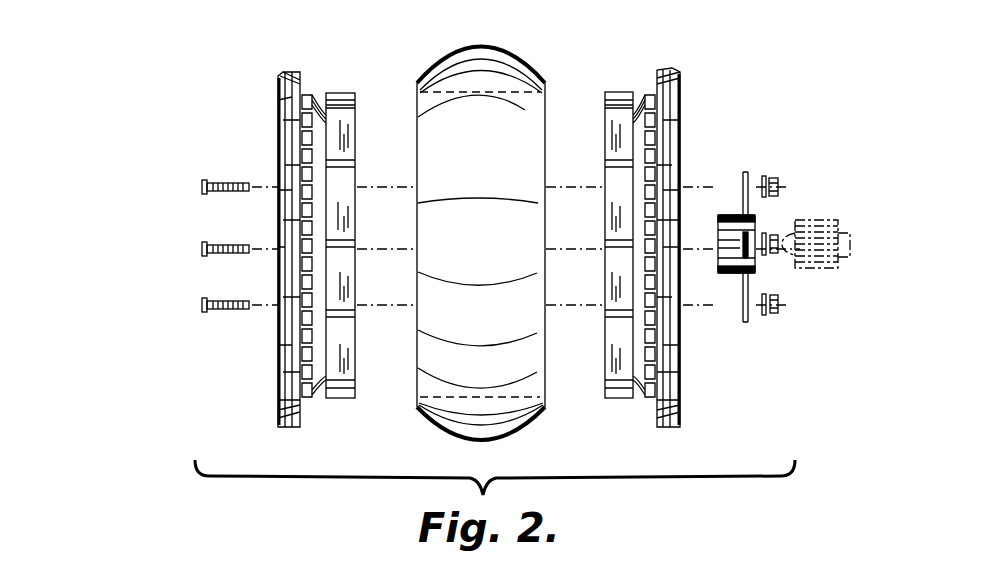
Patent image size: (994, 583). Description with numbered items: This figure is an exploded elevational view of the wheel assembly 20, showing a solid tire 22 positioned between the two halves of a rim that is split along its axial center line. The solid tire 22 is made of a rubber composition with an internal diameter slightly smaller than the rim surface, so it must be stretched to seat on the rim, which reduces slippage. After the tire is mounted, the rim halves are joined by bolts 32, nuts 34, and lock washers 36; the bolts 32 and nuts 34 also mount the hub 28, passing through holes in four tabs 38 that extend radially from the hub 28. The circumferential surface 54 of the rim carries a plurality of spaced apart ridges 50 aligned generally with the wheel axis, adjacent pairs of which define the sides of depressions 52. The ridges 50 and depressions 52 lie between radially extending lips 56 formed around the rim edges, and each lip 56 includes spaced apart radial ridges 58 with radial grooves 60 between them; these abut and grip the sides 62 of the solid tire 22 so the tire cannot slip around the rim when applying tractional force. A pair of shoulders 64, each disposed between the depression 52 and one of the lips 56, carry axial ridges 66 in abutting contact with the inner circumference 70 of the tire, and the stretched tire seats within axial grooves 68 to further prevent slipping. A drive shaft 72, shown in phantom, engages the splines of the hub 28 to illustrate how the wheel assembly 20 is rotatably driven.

The wheel assembly 20 is at (238, 390).
The solid tire 22 is at (549, 64).
The hub 28 is at (718, 214).
The bolts 32 is at (200, 187).
The nuts 34 is at (780, 186).
The lock washers 36 is at (766, 178).
The tabs 38 is at (747, 172).
The ridges 50 is at (355, 142).
The depressions 52 is at (345, 160).
The circumferential surface 54 is at (340, 92).
The lips 56 is at (293, 70).
The radial ridges 58 is at (302, 75).
The radial grooves 60 is at (305, 158).
The sides 62 is at (417, 86).
The shoulders 64 is at (322, 405).
The axial ridges 66 is at (312, 292).
The axial grooves 68 is at (312, 274).
The inner circumference 70 is at (497, 90).
The drive shaft 72 is at (822, 220).